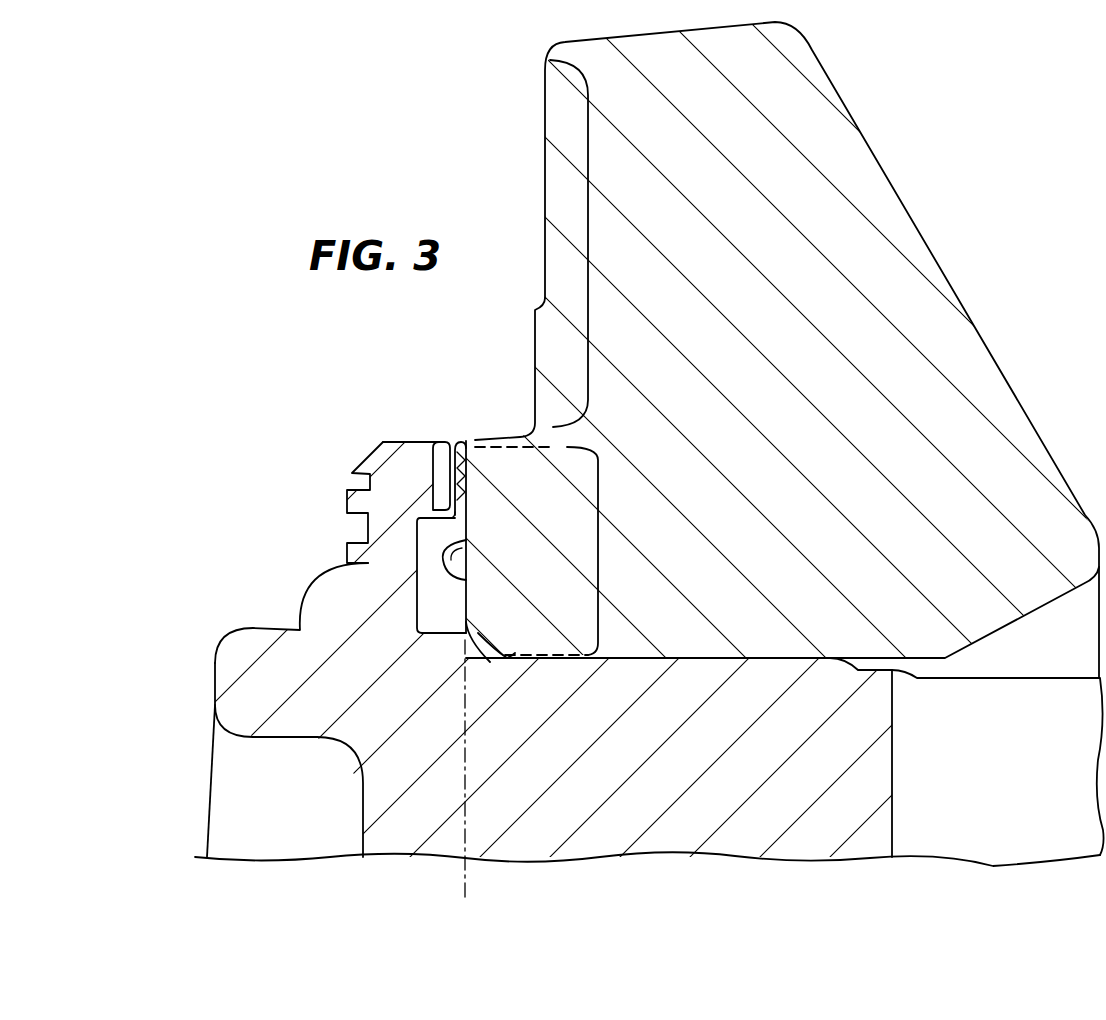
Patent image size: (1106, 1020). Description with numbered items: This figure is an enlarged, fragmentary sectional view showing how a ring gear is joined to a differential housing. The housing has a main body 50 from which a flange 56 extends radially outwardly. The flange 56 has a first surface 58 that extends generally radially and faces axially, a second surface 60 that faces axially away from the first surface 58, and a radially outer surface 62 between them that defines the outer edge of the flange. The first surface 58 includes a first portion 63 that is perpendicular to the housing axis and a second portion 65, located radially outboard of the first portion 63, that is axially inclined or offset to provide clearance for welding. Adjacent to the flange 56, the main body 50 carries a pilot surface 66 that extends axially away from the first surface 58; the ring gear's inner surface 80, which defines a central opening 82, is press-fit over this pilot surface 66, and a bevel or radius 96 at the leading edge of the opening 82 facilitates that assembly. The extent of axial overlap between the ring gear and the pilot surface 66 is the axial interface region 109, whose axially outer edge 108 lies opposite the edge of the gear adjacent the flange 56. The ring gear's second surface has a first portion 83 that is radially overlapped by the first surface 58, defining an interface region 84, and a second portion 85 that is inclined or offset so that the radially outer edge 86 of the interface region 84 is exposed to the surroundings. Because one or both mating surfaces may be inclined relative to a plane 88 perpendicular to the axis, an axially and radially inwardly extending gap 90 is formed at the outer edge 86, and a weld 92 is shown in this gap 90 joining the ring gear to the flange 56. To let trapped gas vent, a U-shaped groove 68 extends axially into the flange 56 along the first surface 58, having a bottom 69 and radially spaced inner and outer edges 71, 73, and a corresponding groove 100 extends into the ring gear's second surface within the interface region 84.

The main body 50 is at (737, 840).
The flange 56 is at (402, 487).
The first surface 58 is at (475, 637).
The second surface 60 is at (368, 515).
The radially outer surface 62 is at (418, 440).
The first portion 63 is at (410, 573).
The second portion 65 is at (430, 482).
The pilot surface 66 is at (638, 658).
The groove 68 is at (452, 562).
The bottom 69 is at (467, 580).
The inner edge 71 is at (465, 577).
The outer edge 73 is at (468, 547).
The inner surface 80 is at (738, 668).
The central opening 82 is at (945, 692).
The first portion 83 is at (609, 540).
The interface region 84 is at (476, 510).
The second portion 85 is at (588, 238).
The radially outer edge 86 is at (467, 442).
The plane 88 is at (470, 887).
The gap 90 is at (458, 498).
The weld 92 is at (460, 458).
The bevel or radius 96 is at (480, 660).
The groove 100 is at (477, 555).
The axially outer edge 108 is at (825, 660).
The axial interface region 109 is at (695, 666).